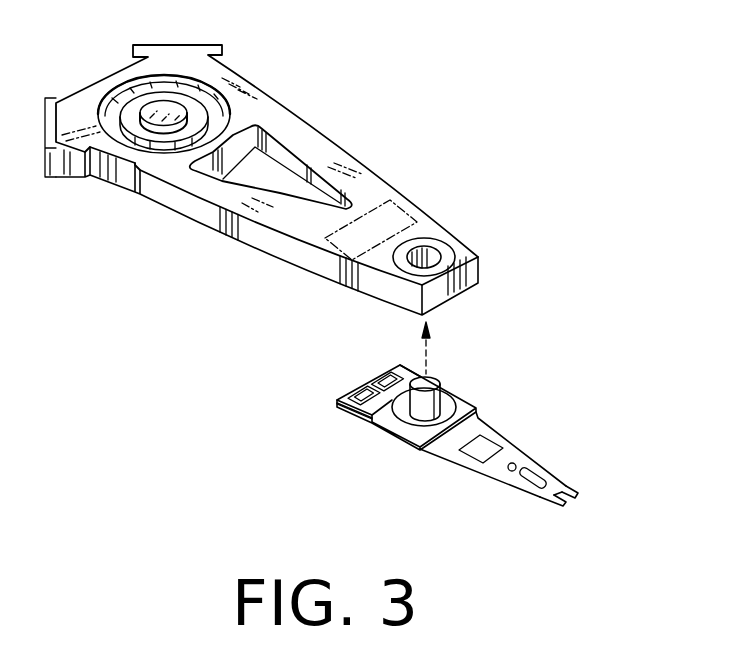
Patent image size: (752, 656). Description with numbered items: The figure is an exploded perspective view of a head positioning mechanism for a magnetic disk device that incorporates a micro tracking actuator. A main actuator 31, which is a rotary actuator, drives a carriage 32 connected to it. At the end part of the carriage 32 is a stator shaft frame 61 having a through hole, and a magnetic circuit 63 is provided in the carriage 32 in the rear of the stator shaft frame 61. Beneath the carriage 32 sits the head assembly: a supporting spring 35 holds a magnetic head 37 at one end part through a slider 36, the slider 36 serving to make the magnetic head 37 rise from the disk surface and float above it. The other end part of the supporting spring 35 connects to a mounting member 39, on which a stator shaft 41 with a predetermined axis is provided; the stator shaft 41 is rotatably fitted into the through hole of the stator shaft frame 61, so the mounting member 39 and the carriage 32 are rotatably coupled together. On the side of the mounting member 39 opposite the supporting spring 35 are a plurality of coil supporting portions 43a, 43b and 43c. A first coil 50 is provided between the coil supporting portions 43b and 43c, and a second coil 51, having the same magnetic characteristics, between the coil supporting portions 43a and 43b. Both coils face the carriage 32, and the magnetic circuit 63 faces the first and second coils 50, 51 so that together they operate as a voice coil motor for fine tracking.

The main actuator 31 is at (158, 111).
The carriage 32 is at (320, 155).
The supporting spring 35 is at (502, 430).
The slider 36 is at (577, 488).
The magnetic head 37 is at (578, 495).
The mounting member 39 is at (413, 448).
The stator shaft 41 is at (417, 407).
The coil supporting portion 43a is at (337, 405).
The coil supporting portion 43b is at (363, 380).
The coil supporting portion 43c is at (407, 362).
The first coil 50 is at (382, 372).
The second coil 51 is at (340, 392).
The stator shaft frame 61 is at (445, 250).
The magnetic circuit 63 is at (406, 206).